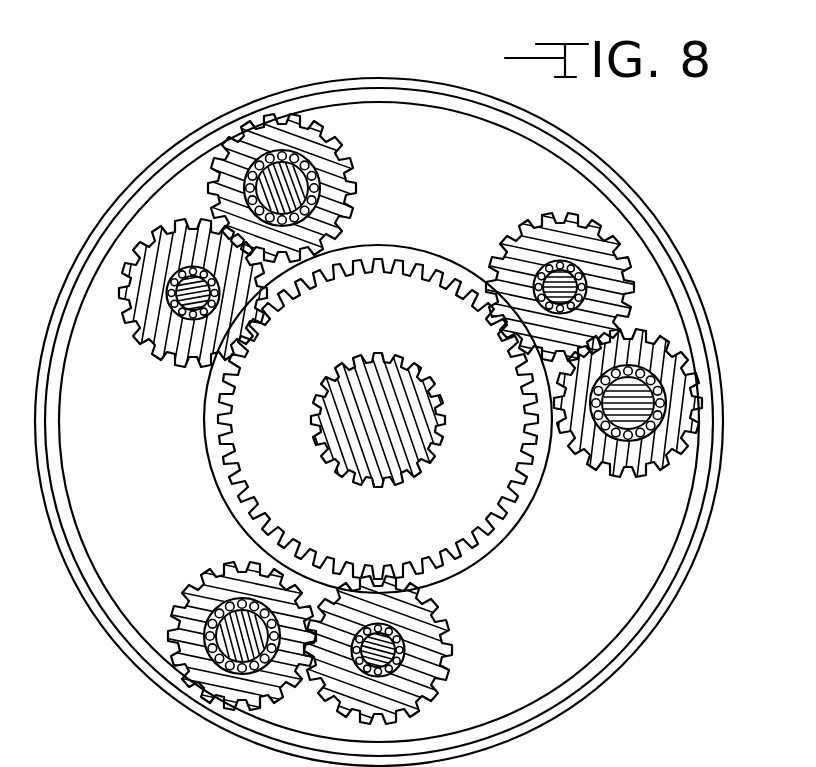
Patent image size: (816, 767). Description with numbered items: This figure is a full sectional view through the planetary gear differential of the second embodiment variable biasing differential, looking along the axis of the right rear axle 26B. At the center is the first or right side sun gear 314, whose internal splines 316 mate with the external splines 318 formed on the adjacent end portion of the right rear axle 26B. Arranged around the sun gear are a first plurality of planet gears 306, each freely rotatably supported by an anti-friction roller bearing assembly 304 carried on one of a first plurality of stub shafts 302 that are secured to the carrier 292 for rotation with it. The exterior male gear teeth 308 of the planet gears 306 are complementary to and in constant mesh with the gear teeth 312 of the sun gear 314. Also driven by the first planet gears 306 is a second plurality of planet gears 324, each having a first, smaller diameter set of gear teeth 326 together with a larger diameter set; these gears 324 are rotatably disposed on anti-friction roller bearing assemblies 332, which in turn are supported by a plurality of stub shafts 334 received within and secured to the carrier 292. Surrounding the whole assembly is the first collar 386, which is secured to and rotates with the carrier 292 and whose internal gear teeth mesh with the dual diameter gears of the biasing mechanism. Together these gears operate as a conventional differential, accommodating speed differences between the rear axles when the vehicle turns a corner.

The carrier 292 is at (493, 178).
The right rear axle 26B is at (363, 448).
The stub shafts 302 is at (192, 294).
The anti-friction roller bearing assembly 304 is at (432, 660).
The planet gear 306 is at (180, 337).
The exterior male gear teeth 308 is at (128, 267).
The gear teeth 312 is at (394, 388).
The first sun gear 314 is at (373, 298).
The internal splines 316 is at (378, 423).
The external splines 318 is at (407, 367).
The second plurality of planet gears 324 is at (299, 152).
The smaller diameter gear teeth 326 is at (335, 181).
The anti-friction roller bearing assemblies 332 is at (328, 120).
The stub shafts 334 is at (277, 151).
The first collar 386 is at (115, 193).